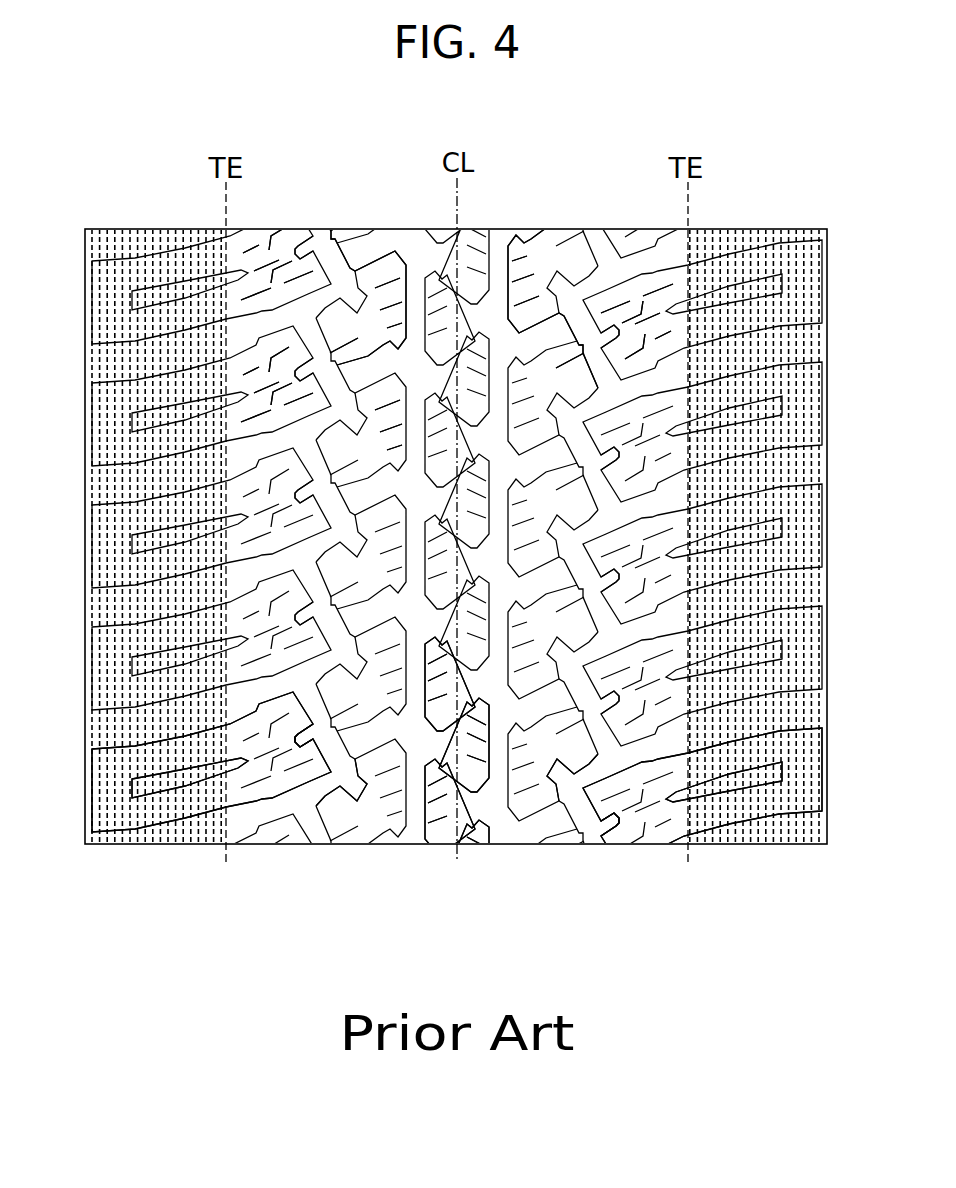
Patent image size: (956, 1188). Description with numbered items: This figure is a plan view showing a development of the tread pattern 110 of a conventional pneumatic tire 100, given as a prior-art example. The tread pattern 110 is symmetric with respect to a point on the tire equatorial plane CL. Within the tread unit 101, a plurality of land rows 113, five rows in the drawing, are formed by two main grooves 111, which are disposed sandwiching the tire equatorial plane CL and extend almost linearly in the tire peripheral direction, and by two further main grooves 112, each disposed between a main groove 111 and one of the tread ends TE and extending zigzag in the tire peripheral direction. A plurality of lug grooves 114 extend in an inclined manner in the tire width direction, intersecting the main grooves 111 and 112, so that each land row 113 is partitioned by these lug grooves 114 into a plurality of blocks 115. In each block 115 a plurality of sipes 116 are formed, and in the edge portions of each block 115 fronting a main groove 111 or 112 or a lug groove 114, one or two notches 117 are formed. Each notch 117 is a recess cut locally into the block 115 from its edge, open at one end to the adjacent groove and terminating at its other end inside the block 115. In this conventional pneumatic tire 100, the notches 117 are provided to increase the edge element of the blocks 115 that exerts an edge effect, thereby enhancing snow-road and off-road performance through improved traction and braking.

The pneumatic tire 100 is at (177, 225).
The tread unit 101 is at (212, 227).
The tread pattern 110 is at (691, 227).
The main groove 111 is at (417, 288).
The main groove 112 is at (333, 240).
The land row 113 is at (270, 226).
The lug groove 114 is at (276, 810).
The block 115 is at (243, 800).
The sipe 116 is at (393, 832).
The notch 117 is at (438, 262).